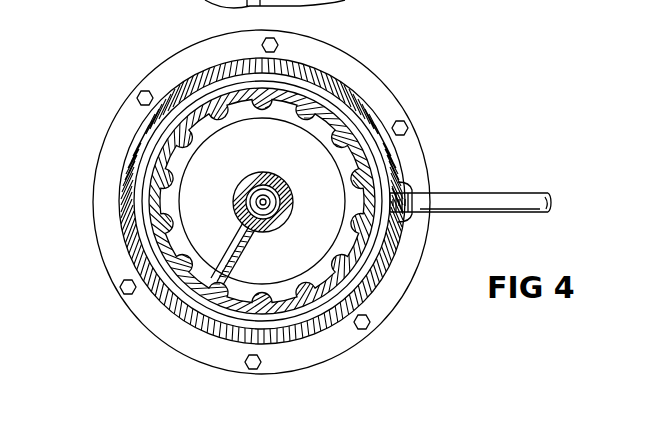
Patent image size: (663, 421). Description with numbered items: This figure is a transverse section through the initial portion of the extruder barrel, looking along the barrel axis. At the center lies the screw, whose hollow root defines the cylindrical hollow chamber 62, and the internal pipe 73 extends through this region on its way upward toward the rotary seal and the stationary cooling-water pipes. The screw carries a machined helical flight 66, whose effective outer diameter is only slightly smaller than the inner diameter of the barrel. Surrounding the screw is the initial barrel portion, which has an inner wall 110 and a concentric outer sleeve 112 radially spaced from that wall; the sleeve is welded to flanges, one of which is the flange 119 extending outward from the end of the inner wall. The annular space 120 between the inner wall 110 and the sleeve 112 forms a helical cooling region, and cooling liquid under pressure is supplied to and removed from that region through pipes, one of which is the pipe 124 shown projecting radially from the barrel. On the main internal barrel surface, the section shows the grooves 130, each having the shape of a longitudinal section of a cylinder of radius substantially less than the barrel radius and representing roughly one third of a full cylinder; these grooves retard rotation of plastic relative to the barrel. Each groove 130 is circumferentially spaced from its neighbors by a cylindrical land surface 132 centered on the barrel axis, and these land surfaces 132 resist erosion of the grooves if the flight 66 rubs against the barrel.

The hollow chamber 62 is at (291, 197).
The helical flight 66 is at (318, 253).
The internal pipe 73 is at (262, 196).
The inner wall 110 is at (180, 133).
The outer sleeve 112 is at (120, 188).
The flange 119 is at (347, 64).
The annular space 120 is at (358, 275).
The pipe 124 is at (536, 194).
The grooves 130 is at (262, 92).
The land surface 132 is at (178, 185).